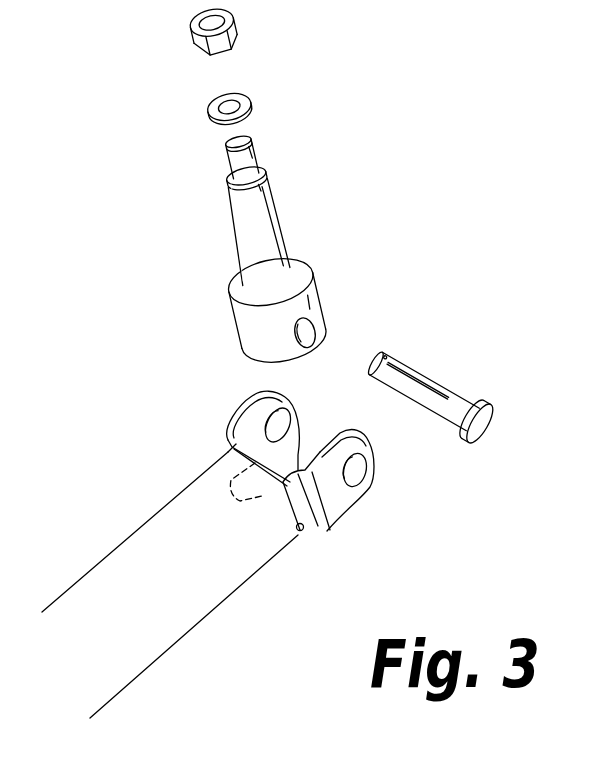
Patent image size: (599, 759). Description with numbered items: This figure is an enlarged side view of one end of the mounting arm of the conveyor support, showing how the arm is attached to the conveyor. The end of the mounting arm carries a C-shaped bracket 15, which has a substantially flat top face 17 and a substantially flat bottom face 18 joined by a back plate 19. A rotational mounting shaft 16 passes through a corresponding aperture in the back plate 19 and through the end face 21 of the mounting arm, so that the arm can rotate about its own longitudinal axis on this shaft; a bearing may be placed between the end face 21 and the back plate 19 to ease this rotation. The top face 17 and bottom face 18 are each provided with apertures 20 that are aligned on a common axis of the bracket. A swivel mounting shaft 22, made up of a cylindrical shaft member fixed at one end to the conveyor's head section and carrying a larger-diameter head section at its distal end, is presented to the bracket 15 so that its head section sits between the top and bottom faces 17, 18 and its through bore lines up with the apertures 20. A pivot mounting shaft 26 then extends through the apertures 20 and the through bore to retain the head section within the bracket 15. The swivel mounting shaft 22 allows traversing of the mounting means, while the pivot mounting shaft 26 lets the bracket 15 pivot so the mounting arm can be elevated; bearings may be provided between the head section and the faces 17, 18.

The C-shaped bracket 15 is at (325, 488).
The rotational mounting shaft 16 is at (217, 467).
The top face 17 is at (245, 402).
The bottom face 18 is at (367, 490).
The back plate 19 is at (316, 518).
The apertures 20 is at (287, 427).
The end face 21 is at (302, 533).
The swivel mounting shaft 22 is at (304, 248).
The pivot mounting shaft 26 is at (455, 392).